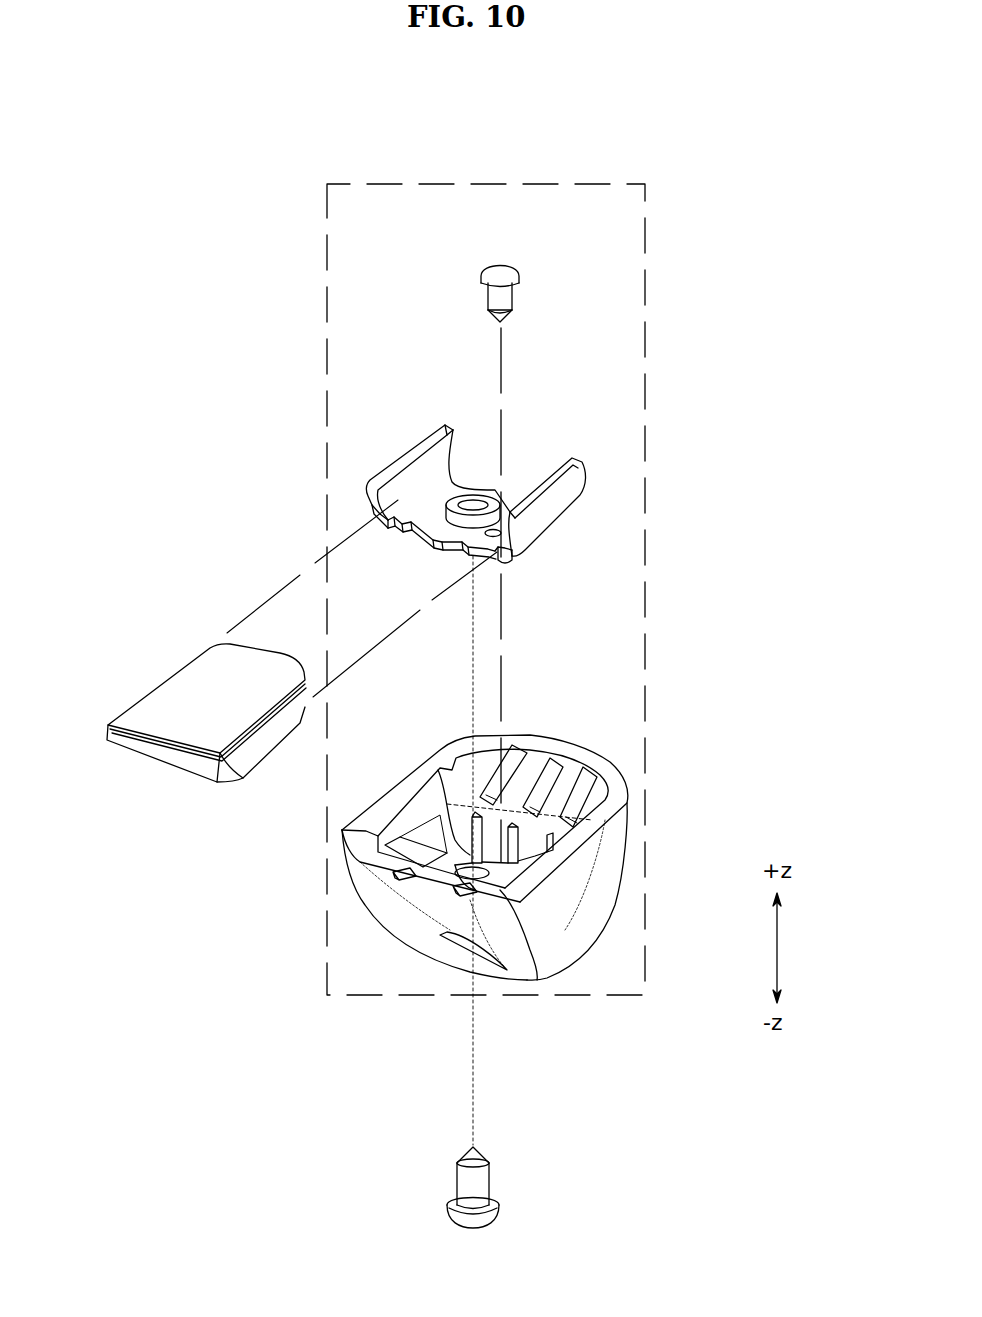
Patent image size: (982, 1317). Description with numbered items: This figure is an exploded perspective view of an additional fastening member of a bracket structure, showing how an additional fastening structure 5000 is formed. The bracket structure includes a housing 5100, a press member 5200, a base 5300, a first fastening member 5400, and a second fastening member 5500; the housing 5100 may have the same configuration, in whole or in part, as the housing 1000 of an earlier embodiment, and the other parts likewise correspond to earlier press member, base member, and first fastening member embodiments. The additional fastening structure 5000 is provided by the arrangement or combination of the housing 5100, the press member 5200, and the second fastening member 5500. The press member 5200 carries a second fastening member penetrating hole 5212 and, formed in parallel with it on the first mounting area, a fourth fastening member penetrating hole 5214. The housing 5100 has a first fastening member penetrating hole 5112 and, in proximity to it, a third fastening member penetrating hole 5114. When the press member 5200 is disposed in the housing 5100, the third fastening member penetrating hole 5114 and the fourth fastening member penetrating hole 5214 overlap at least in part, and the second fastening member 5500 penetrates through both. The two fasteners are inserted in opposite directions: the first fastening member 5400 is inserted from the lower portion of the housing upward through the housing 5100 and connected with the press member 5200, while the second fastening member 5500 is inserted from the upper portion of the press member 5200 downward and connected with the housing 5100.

The housing 1000 is at (136, 218).
The additional fastening structure 5000 is at (647, 353).
The housing 5100 is at (433, 895).
The first fastening member penetrating hole 5112 is at (458, 890).
The third fastening member penetrating hole 5114 is at (505, 885).
The press member 5200 is at (571, 495).
The second fastening member penetrating hole 5212 is at (470, 500).
The fourth fastening member penetrating hole 5214 is at (508, 558).
The base 5300 is at (175, 702).
The first fastening member 5400 is at (478, 1182).
The second fastening member 5500 is at (510, 268).